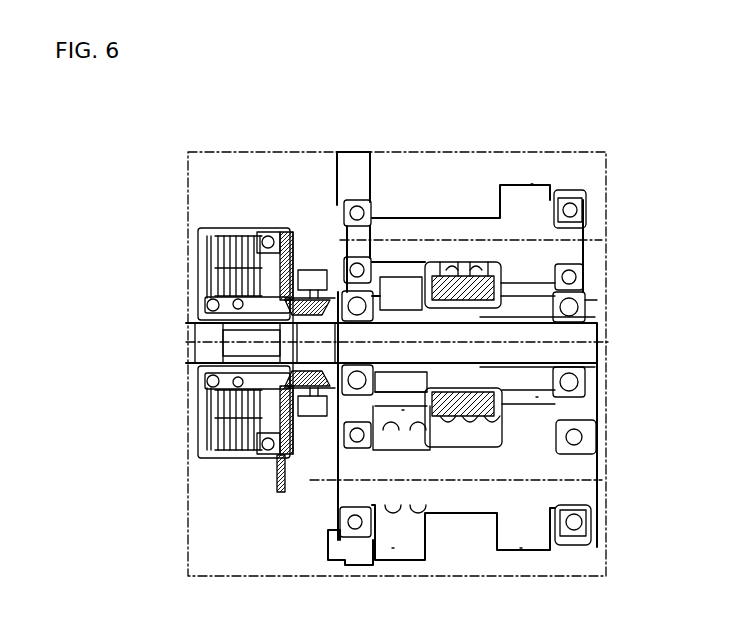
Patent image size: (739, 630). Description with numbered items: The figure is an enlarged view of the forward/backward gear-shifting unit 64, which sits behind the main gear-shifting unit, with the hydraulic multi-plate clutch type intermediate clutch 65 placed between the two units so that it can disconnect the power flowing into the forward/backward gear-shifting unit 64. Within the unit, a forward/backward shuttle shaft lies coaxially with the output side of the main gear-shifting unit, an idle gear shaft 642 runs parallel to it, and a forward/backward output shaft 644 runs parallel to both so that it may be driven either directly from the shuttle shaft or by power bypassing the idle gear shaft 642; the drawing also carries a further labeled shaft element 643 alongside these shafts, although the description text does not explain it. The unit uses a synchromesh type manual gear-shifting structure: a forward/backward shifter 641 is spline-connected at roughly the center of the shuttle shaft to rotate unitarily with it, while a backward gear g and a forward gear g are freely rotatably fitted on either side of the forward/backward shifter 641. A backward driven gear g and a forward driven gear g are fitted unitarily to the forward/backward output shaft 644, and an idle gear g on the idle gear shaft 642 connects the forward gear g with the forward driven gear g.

The forward/backward gear-shifting unit 64 is at (424, 100).
The forward/backward shifter 641 is at (458, 262).
The idle gear shaft 642 is at (566, 231).
The shaft 643 is at (574, 336).
The forward/backward output shaft 644 is at (586, 473).
The intermediate clutch 65 is at (208, 467).
The gear g is at (531, 183).